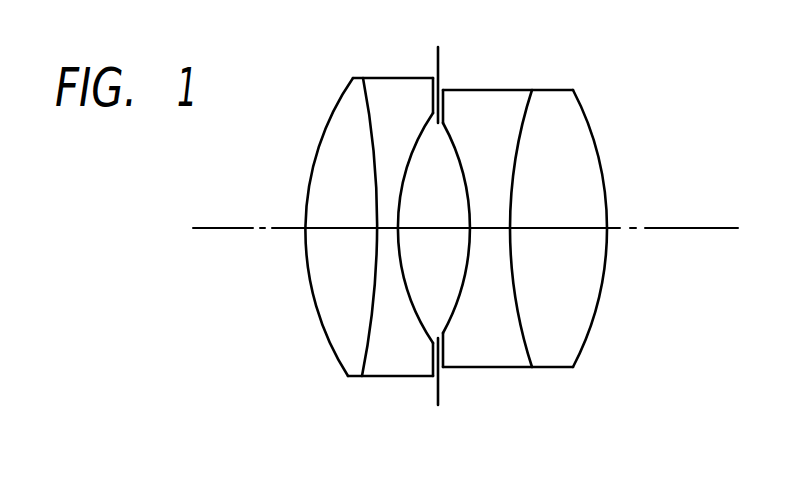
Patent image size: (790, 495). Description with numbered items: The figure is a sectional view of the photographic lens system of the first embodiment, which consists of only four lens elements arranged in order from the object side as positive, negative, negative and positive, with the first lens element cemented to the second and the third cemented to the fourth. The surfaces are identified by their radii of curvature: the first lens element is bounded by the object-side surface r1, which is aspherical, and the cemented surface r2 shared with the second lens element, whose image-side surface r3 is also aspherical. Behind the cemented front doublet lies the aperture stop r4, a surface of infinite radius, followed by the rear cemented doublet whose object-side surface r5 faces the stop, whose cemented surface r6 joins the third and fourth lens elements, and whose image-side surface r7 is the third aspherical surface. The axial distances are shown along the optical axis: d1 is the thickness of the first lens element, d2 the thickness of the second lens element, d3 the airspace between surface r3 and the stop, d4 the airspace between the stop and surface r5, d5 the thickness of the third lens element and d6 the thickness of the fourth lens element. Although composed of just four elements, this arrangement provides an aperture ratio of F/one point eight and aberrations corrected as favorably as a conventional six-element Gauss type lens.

The radius of curvature of first surface r1 is at (336, 106).
The radius of curvature of second surface r2 is at (369, 108).
The radius of curvature of third surface r3 is at (420, 133).
The stop r4 is at (437, 62).
The radius of curvature of fifth surface r5 is at (449, 129).
The radius of curvature of sixth surface r6 is at (523, 124).
The radius of curvature of seventh surface r7 is at (583, 112).
The thickness of first lens element d1 is at (340, 231).
The thickness of second lens element d2 is at (388, 230).
The airspace between third surface and stop d3 is at (415, 229).
The airspace between stop and fifth surface d4 is at (453, 229).
The thickness of third lens element d5 is at (490, 229).
The thickness of fourth lens element d6 is at (548, 229).